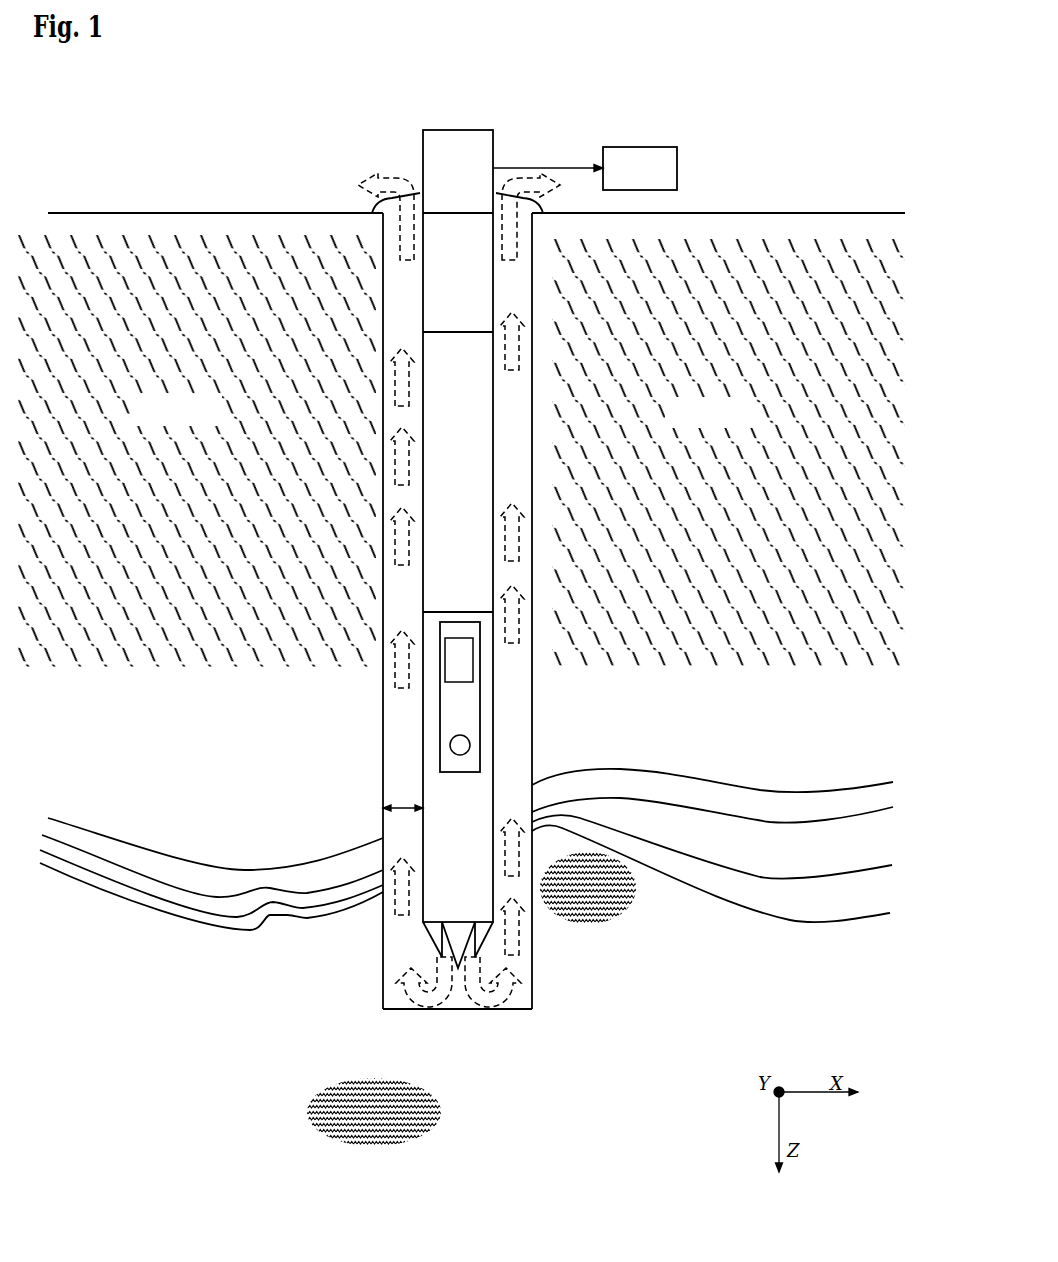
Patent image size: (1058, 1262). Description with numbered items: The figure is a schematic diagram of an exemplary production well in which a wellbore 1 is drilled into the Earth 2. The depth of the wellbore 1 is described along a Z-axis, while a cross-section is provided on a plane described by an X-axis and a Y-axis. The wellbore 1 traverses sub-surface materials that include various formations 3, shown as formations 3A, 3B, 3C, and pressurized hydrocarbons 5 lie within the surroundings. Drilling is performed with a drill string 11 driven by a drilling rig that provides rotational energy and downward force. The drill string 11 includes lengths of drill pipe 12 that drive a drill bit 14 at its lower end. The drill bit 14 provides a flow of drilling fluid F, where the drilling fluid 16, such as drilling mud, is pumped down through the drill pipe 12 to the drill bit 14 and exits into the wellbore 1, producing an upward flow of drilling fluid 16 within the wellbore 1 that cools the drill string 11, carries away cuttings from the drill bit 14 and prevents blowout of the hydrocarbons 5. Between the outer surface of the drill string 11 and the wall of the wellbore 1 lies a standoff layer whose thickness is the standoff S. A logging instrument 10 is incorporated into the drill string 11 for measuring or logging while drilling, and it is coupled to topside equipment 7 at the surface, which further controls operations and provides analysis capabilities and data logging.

The wellbore 1 is at (388, 977).
The Earth 2 is at (461, 451).
The formations 3 is at (487, 879).
The formation 3A is at (712, 786).
The formation 3B is at (712, 826).
The formation 3C is at (712, 858).
The hydrocarbons 5 is at (615, 903).
The topside equipment 7 is at (650, 155).
The logging instrument 10 is at (457, 715).
The drill string 11 is at (430, 170).
The drill pipe 12 is at (453, 320).
The drill bit 14 is at (458, 945).
The drilling fluid 16 is at (363, 185).
The standoff S is at (388, 810).
The flow of drilling fluid F is at (503, 993).